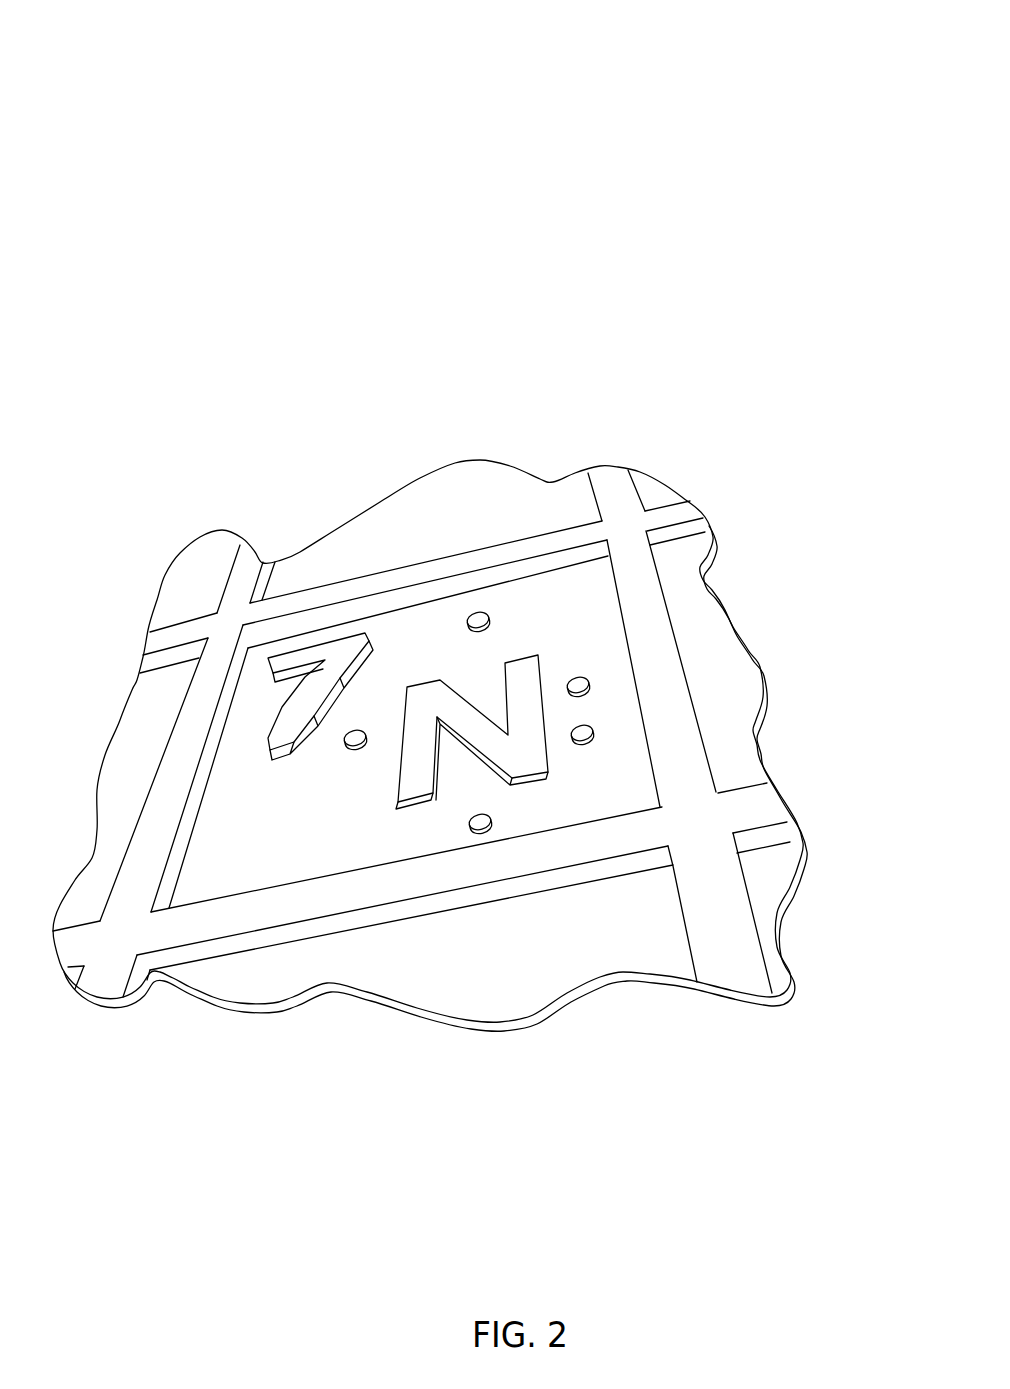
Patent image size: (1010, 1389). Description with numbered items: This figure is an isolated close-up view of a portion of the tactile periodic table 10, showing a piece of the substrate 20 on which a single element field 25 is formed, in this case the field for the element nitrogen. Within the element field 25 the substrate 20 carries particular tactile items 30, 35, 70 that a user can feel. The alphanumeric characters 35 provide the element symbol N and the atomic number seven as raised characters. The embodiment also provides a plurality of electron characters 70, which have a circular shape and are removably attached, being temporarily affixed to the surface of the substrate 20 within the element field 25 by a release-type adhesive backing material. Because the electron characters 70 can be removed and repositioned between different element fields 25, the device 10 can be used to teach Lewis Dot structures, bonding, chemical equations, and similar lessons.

The tactile periodic table 10 is at (118, 183).
The substrate 20 is at (758, 734).
The element field 25 is at (717, 658).
The tactile items 30 is at (608, 493).
The alphanumeric characters 35 is at (420, 773).
The electron characters 70 is at (592, 692).